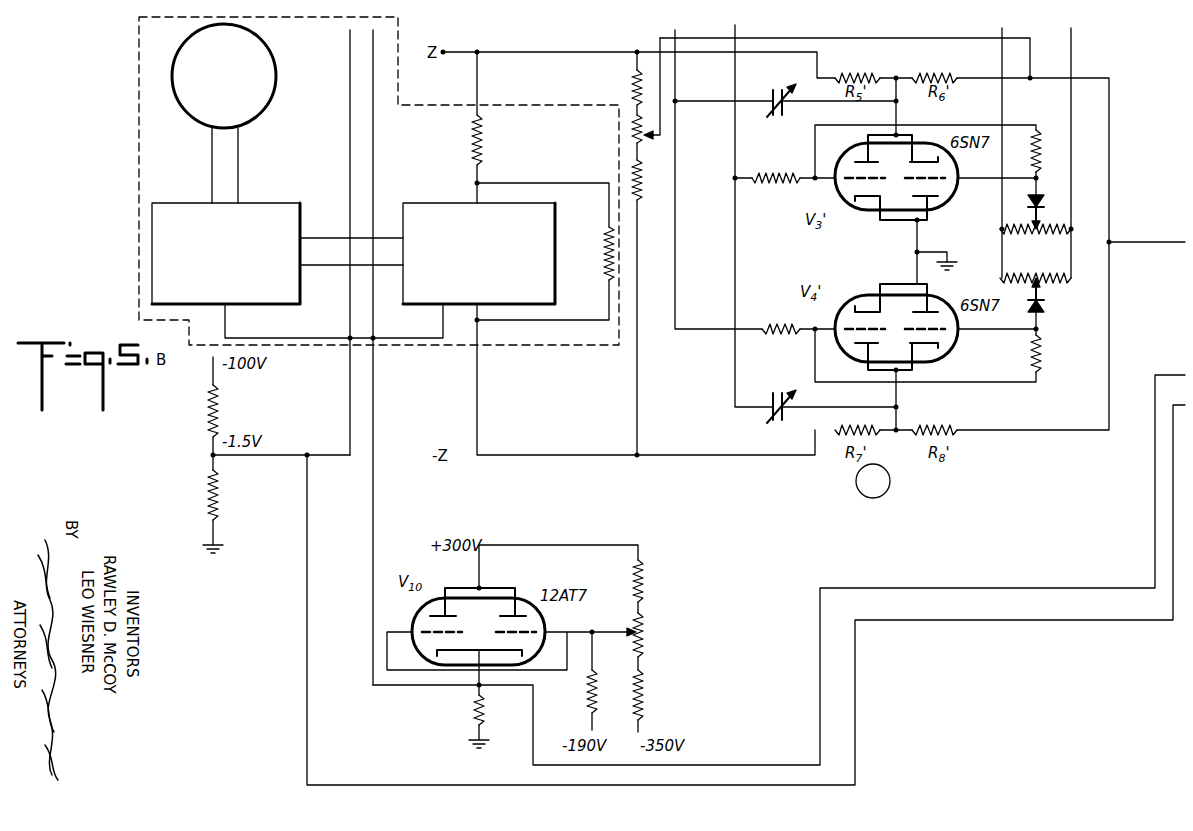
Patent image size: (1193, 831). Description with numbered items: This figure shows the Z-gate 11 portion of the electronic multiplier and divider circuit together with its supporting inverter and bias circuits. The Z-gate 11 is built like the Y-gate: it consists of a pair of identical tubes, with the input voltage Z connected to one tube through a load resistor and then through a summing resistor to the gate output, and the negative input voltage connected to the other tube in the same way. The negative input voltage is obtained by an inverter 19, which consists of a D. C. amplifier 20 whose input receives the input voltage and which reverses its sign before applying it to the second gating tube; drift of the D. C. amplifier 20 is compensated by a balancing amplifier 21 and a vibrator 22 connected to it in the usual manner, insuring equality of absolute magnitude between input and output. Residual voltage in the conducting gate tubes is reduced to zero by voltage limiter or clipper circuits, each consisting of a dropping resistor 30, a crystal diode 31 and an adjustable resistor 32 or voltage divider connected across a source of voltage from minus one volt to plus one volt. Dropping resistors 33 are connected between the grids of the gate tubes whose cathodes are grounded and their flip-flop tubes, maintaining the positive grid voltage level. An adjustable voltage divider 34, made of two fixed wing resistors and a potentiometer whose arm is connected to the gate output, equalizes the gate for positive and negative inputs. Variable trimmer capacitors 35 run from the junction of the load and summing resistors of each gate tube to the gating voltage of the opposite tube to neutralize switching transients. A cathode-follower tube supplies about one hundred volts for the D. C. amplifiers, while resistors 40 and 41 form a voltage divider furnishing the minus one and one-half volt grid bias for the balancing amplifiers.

The inverter 19 is at (313, 181).
The D. C. amplifier 20 is at (428, 190).
The balancing amplifier 21 is at (275, 203).
The vibrator 22 is at (275, 100).
The dropping resistor 30 is at (1041, 146).
The crystal diode 31 is at (1044, 207).
The adjustable resistor 32 is at (1033, 250).
The dropping resistor 33 is at (779, 184).
The adjustable voltage divider 34 is at (637, 130).
The variable trimmer capacitor 35 is at (778, 122).
The resistor 40 is at (208, 418).
The resistor 41 is at (208, 498).
The Z-gate 11 is at (873, 481).